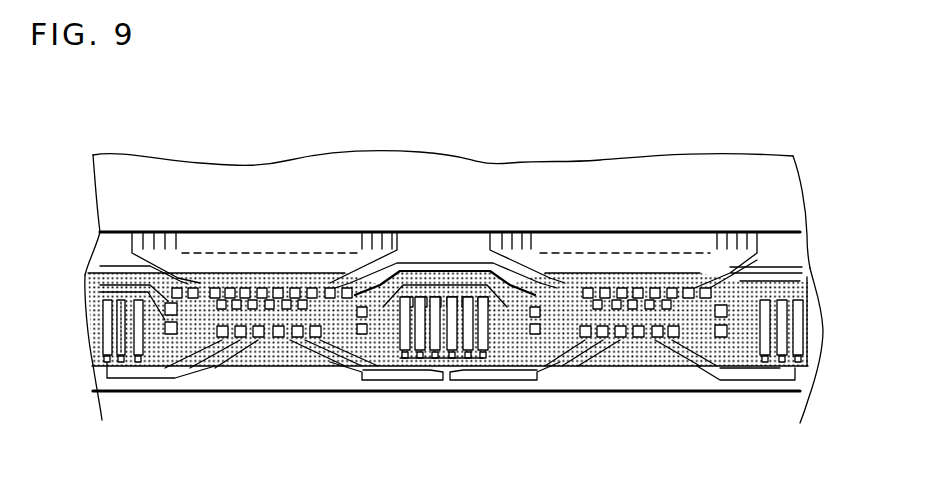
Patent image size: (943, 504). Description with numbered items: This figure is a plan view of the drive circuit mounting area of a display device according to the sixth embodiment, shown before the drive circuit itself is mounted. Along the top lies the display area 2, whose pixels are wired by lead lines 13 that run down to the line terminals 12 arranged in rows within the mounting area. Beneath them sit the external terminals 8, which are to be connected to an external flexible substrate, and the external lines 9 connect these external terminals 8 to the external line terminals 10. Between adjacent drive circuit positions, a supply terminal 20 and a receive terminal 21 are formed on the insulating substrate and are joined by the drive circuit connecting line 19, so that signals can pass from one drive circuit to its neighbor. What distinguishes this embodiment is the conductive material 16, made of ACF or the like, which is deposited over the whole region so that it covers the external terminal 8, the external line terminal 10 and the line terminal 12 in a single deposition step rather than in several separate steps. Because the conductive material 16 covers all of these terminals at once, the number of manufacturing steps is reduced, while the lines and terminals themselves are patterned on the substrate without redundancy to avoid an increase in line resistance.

The display area 2 is at (790, 193).
The external terminal 8 is at (417, 352).
The external line 9 is at (203, 370).
The external line terminal 10 is at (297, 340).
The line terminal 12 is at (237, 300).
The lead line 13 is at (170, 275).
The conductive material 16 is at (800, 274).
The drive circuit connecting line 19 is at (437, 260).
The supply terminal 20 is at (333, 287).
The receive terminal 21 is at (560, 283).